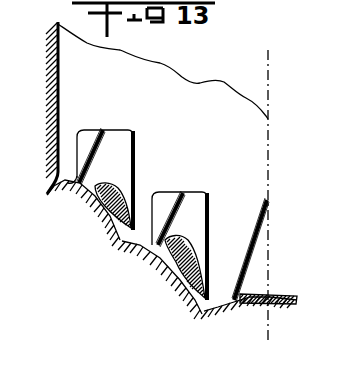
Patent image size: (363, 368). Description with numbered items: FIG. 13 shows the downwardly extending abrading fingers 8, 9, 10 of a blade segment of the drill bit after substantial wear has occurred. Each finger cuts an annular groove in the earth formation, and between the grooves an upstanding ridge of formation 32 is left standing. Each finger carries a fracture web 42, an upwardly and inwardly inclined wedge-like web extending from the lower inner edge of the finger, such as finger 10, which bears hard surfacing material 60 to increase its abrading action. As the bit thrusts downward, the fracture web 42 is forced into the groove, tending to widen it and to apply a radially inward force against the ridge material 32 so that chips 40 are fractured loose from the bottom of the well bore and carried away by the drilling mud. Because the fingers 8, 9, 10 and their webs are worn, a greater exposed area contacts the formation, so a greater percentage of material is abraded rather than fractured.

The abrading finger 8 is at (58, 180).
The abrading finger 9 is at (122, 240).
The abrading finger 10 is at (204, 311).
The upstanding formation 32 is at (191, 246).
The chip 40 is at (108, 183).
The fracture web 42 is at (97, 142).
The hard surfacing material 60 is at (108, 129).